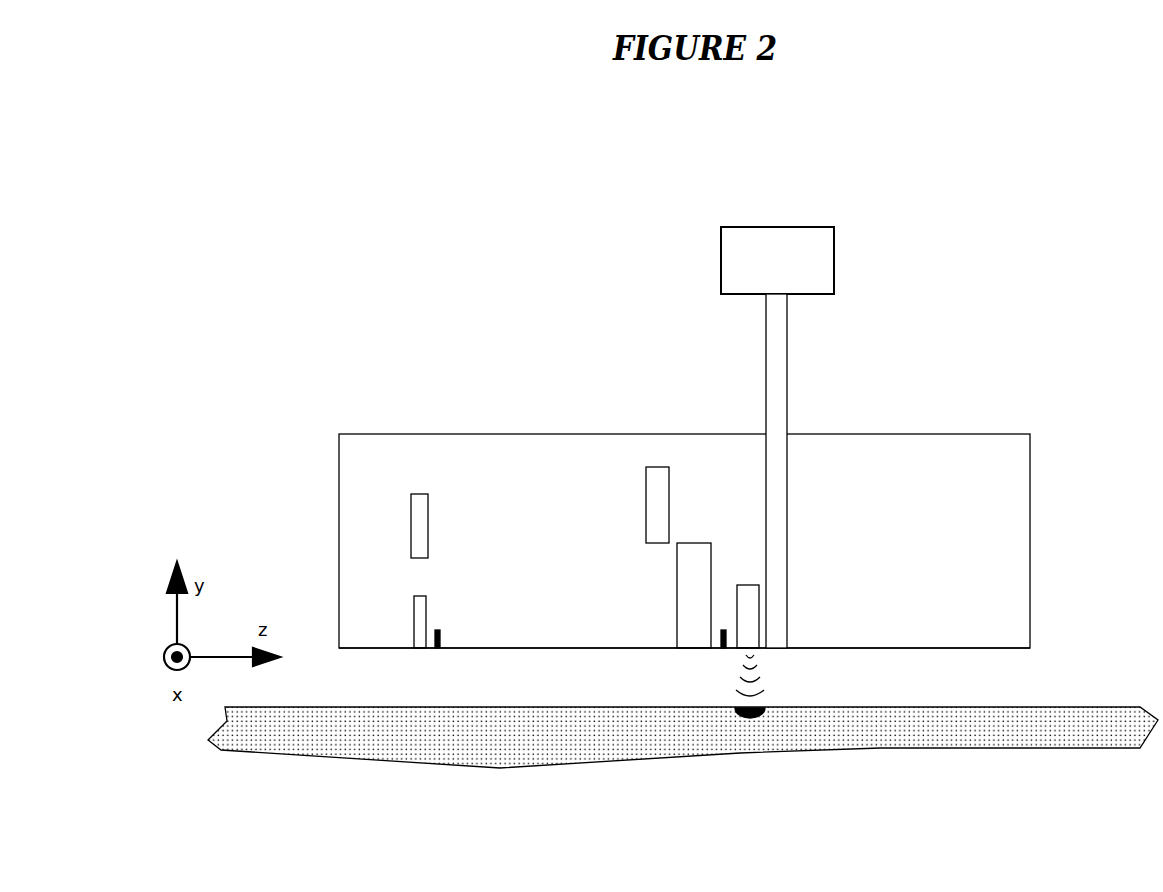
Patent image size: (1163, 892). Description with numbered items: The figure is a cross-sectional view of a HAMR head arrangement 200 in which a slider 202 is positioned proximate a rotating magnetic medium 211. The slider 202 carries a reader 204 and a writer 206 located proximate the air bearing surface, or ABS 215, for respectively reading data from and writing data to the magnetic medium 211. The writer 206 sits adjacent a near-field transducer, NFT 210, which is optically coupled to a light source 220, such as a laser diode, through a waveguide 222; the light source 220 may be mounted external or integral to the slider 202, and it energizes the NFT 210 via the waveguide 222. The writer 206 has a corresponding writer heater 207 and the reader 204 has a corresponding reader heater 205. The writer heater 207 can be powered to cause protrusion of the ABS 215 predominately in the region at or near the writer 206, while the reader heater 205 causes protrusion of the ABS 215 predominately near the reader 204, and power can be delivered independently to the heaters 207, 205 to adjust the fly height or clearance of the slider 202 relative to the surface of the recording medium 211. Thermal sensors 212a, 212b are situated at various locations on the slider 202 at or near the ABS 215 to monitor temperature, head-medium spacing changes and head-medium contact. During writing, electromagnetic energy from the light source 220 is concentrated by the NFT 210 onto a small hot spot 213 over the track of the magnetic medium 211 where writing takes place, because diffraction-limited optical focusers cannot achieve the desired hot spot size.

The HAMR head arrangement 200 is at (428, 272).
The slider 202 is at (1062, 404).
The reader 204 is at (414, 611).
The reader heater 205 is at (428, 527).
The writer 206 is at (677, 604).
The writer heater 207 is at (646, 512).
The near-field transducer (NFT) 210 is at (746, 585).
The magnetic medium 211 is at (1090, 707).
The thermal sensor 212a is at (723, 649).
The thermal sensor 212b is at (437, 650).
The hot spot 213 is at (750, 717).
The ABS 215 is at (915, 650).
The light source 220 is at (835, 254).
The waveguide 222 is at (788, 369).